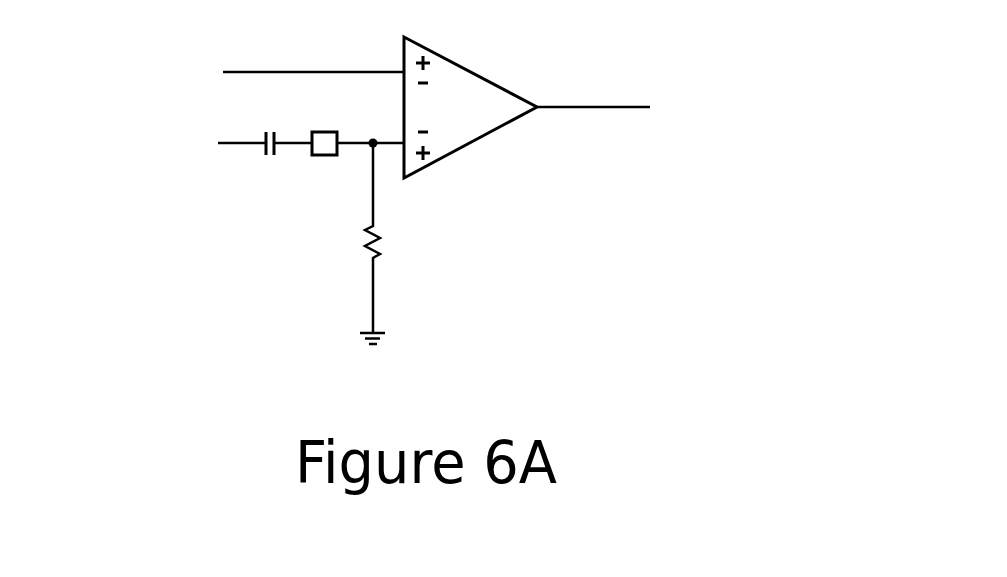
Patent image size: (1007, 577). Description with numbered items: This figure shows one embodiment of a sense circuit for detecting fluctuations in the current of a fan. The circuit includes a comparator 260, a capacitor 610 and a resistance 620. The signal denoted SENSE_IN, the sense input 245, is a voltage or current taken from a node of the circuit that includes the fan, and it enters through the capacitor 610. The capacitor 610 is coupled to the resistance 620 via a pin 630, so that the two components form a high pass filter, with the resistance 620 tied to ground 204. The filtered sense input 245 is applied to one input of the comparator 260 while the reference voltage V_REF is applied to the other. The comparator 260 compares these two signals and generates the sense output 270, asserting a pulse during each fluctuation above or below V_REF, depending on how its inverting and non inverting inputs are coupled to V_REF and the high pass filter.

The comparator 260 is at (470, 68).
The sense input 245 is at (213, 158).
The capacitor 610 is at (267, 160).
The pin 630 is at (325, 155).
The resistance 620 is at (380, 240).
The ground 204 is at (385, 342).
The sense output 270 is at (870, 120).